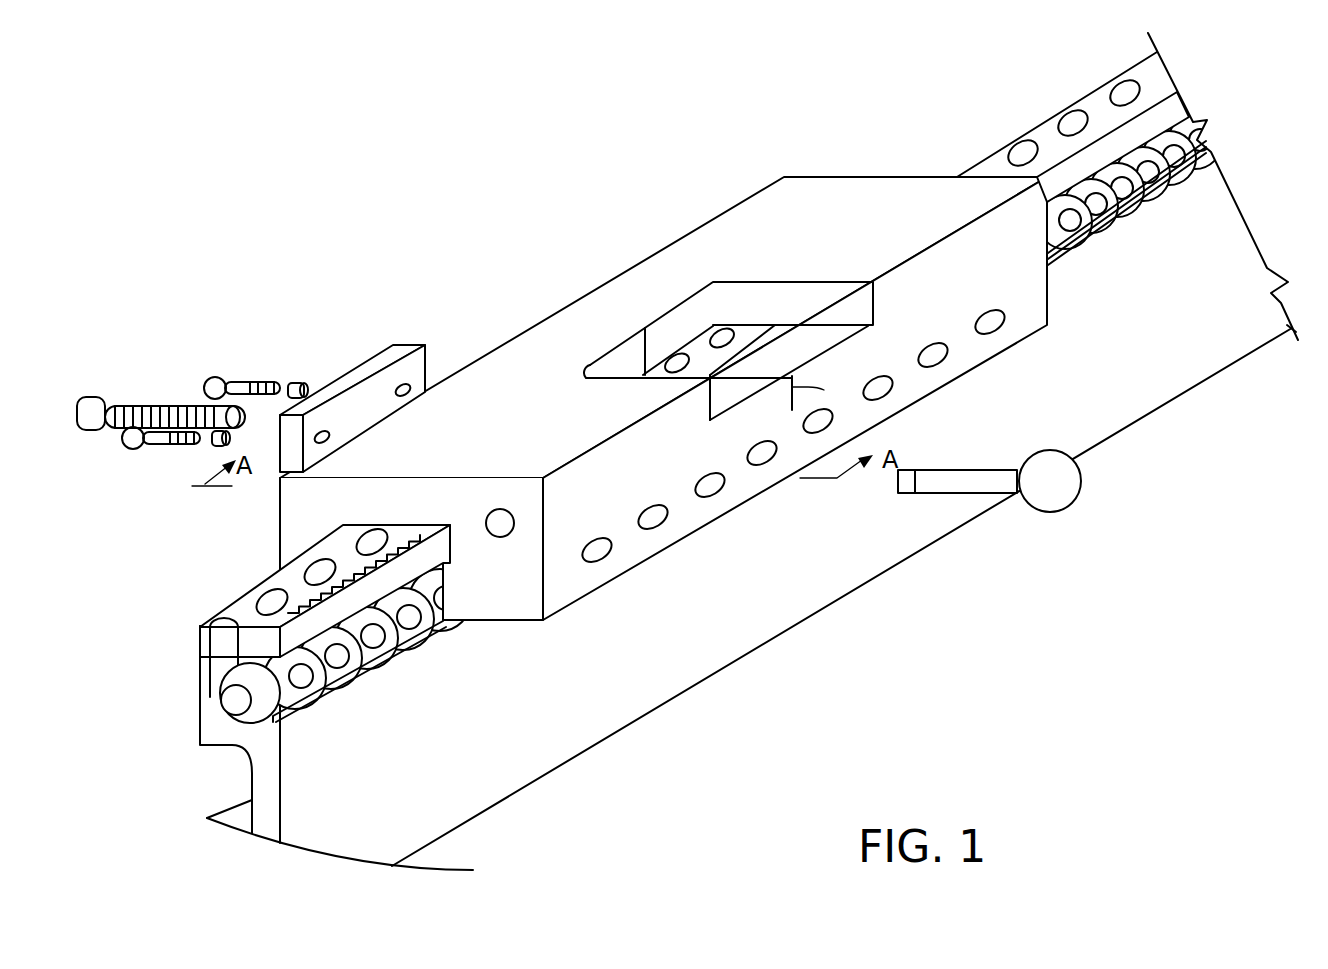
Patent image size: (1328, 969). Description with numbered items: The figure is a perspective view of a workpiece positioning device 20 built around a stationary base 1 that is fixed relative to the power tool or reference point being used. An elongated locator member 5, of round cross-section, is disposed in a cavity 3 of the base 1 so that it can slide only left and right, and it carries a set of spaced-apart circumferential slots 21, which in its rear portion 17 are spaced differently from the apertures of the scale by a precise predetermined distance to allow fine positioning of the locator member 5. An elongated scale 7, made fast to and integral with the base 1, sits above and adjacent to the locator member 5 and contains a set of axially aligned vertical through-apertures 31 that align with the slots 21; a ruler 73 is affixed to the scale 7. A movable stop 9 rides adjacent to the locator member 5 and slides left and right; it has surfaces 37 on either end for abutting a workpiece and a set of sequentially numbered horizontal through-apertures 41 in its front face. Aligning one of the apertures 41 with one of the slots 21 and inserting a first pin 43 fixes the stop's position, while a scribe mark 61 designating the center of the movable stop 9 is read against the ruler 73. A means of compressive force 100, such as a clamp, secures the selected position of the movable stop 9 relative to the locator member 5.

The base 1 is at (717, 633).
The cavity 3 is at (278, 667).
The locator member 5 is at (232, 702).
The scale 7 is at (243, 602).
The movable stop 9 is at (520, 370).
The rear portion 17 is at (1207, 147).
The workpiece positioning device 20 is at (432, 178).
The circumferential slots 21 is at (328, 685).
The through-apertures 31 is at (313, 568).
The surfaces 37 is at (507, 587).
The horizontal through-apertures 41 is at (600, 552).
The first pin 43 is at (992, 482).
The scribe mark 61 is at (764, 372).
The ruler 73 is at (407, 540).
The means of compressive force 100 is at (272, 328).